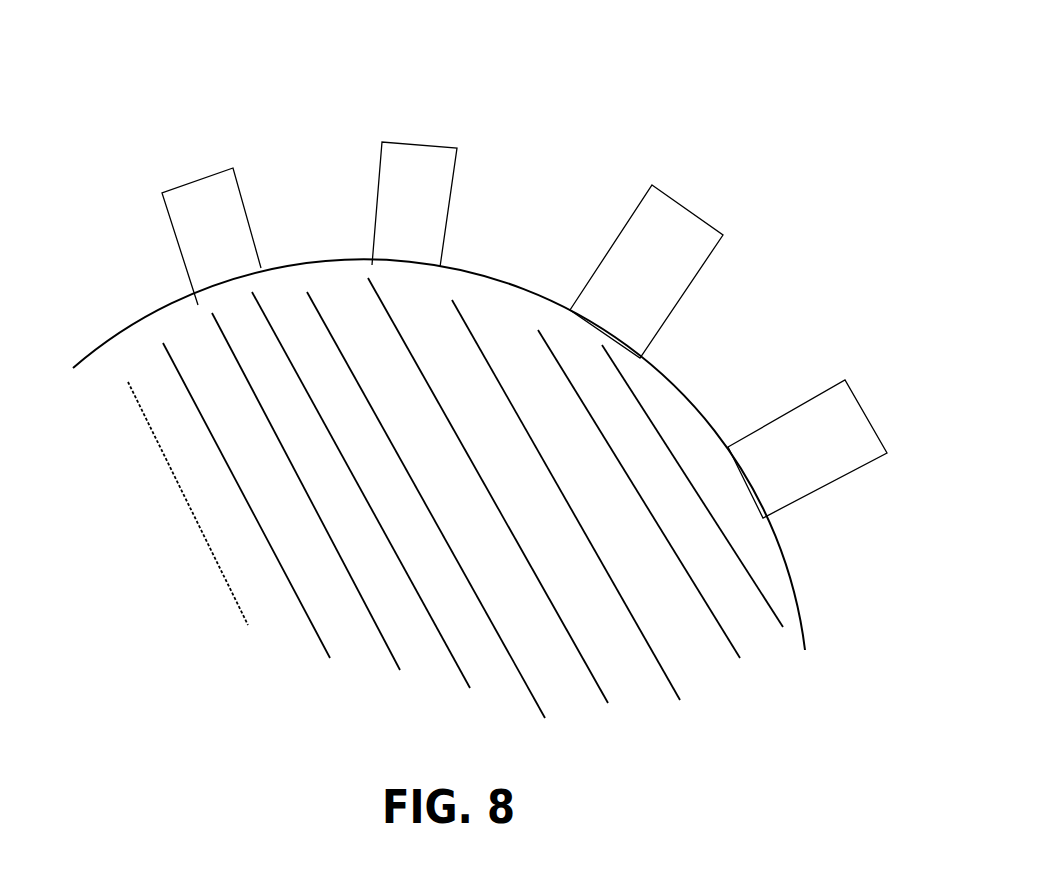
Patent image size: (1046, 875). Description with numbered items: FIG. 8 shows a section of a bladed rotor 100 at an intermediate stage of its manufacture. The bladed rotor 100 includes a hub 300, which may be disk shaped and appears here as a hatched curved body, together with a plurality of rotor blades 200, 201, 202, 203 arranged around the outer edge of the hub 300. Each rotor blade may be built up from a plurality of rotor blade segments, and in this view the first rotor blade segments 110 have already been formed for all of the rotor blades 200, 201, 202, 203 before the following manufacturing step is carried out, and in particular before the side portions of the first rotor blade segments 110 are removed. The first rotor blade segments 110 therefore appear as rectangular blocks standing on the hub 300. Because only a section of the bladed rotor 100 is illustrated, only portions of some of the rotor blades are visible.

The bladed rotor 100 is at (420, 479).
The first rotor blade segments 110 is at (503, 265).
The rotor blade 200 is at (162, 176).
The rotor blade 201 is at (349, 200).
The rotor blade 202 is at (585, 245).
The rotor blade 203 is at (779, 384).
The hub 300 is at (116, 310).